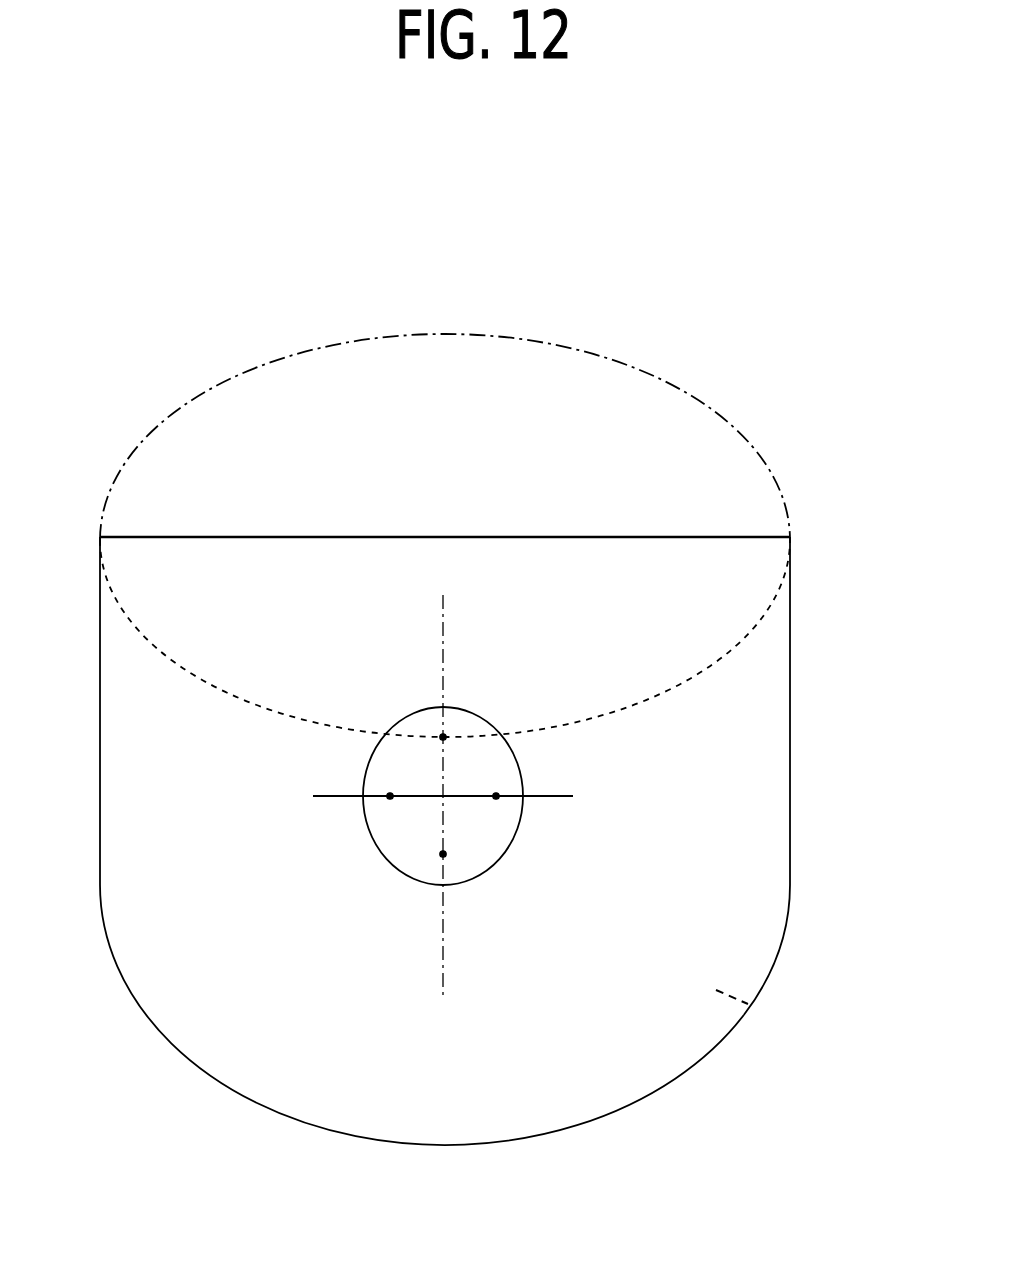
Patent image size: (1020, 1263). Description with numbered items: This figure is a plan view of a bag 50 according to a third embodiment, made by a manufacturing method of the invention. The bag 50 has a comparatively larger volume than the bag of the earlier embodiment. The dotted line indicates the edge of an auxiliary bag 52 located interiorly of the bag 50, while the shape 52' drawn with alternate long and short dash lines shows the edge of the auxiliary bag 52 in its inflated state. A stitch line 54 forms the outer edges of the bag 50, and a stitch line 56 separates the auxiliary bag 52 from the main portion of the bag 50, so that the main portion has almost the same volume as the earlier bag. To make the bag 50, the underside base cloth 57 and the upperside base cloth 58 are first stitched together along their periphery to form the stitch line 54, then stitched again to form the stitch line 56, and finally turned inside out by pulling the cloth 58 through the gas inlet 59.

The bag 50 is at (789, 607).
The auxiliary bag 52 is at (468, 590).
The edge of the auxiliary bag in the inflated state 52' is at (461, 437).
The stitch line 54 is at (790, 739).
The stitch line 56 is at (134, 537).
The underside base cloth 57 is at (765, 912).
The upperside base cloth 58 is at (748, 1003).
The gas inlet 59 is at (510, 848).